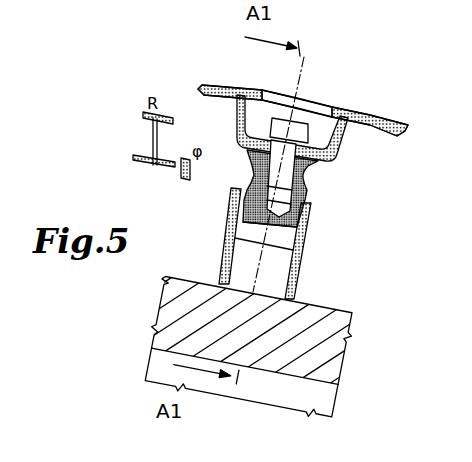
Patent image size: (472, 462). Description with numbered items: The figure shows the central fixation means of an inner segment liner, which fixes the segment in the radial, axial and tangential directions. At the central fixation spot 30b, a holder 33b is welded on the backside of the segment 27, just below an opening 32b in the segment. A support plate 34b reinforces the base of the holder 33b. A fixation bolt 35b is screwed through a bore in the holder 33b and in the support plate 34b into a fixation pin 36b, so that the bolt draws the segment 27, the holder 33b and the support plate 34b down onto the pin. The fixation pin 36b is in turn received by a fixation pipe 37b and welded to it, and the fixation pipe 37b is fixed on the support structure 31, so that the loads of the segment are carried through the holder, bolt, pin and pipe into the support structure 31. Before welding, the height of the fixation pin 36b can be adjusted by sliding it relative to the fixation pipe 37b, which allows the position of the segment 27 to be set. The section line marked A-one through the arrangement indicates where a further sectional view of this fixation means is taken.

The segment 27 is at (370, 125).
The central fixation spot 30b is at (368, 74).
The support structure 31 is at (307, 317).
The opening 32b is at (314, 103).
The holder 33b is at (237, 106).
The support plate 34b is at (246, 139).
The fixation bolt 35b is at (277, 176).
The fixation pin 36b is at (282, 226).
The fixation pipe 37b is at (294, 253).